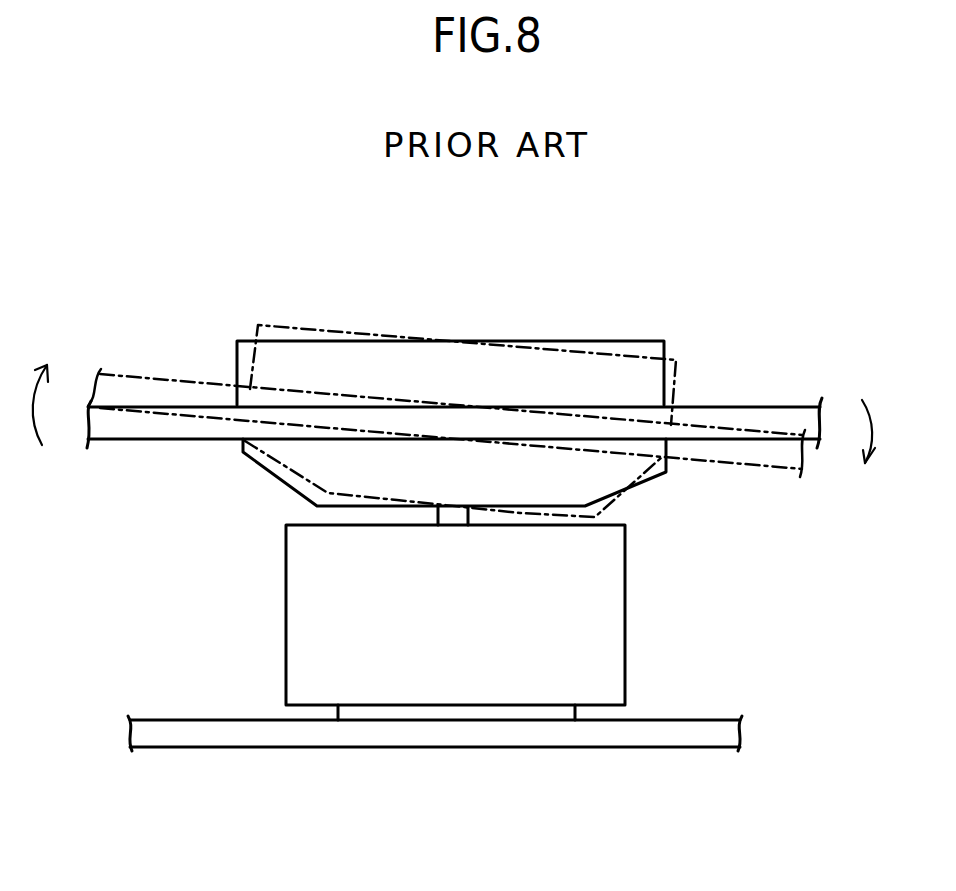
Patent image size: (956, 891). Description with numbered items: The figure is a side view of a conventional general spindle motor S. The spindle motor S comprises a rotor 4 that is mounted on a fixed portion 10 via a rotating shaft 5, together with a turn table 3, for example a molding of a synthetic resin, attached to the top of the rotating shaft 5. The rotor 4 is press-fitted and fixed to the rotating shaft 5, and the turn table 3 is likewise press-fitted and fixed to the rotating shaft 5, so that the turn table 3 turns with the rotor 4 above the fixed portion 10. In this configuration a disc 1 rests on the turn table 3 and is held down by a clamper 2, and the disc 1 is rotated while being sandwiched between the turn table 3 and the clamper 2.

The disc 1 is at (768, 450).
The clamper 2 is at (308, 352).
The turn table 3 is at (289, 461).
The rotor 4 is at (613, 597).
The rotating shaft 5 is at (452, 507).
The fixed portion 10 is at (685, 735).
The spindle motor S is at (660, 507).